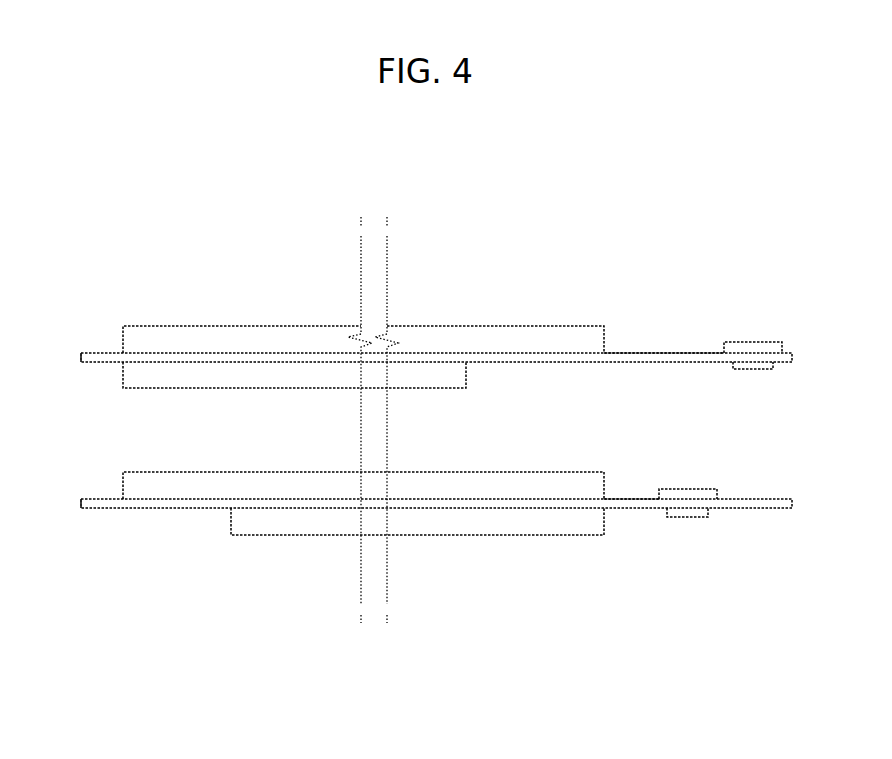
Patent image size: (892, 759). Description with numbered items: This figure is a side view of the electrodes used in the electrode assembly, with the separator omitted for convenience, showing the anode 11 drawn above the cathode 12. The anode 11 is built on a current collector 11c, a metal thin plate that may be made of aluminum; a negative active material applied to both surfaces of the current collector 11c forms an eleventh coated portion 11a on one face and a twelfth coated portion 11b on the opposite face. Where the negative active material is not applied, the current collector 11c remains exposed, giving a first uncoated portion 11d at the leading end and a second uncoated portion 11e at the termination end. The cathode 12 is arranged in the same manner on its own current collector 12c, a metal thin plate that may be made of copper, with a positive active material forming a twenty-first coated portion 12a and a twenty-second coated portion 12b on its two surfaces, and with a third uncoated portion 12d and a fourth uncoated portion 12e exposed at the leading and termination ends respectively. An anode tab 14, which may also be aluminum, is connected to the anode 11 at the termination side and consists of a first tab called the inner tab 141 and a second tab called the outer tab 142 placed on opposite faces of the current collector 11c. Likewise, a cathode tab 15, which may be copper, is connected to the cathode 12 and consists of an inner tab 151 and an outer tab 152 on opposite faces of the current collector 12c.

The anode 11 is at (130, 324).
The 11th coated portion 11a is at (443, 336).
The 12th coated portion 11b is at (216, 375).
The current collector 11c is at (313, 355).
The first uncoated portion 11d is at (97, 364).
The second uncoated portion 11e is at (625, 351).
The cathode 12 is at (165, 470).
The 21st coated portion 12a is at (443, 482).
The 22th coated portion 12b is at (460, 536).
The current collector 12c is at (313, 502).
The third uncoated portion 12d is at (97, 510).
The fourth uncoated portion 12e is at (625, 497).
The anode tab 14 is at (733, 228).
The inner tab 141 is at (750, 340).
The outer tab 142 is at (752, 372).
The cathode tab 15 is at (741, 688).
The inner tab 151 is at (685, 488).
The outer tab 152 is at (686, 520).